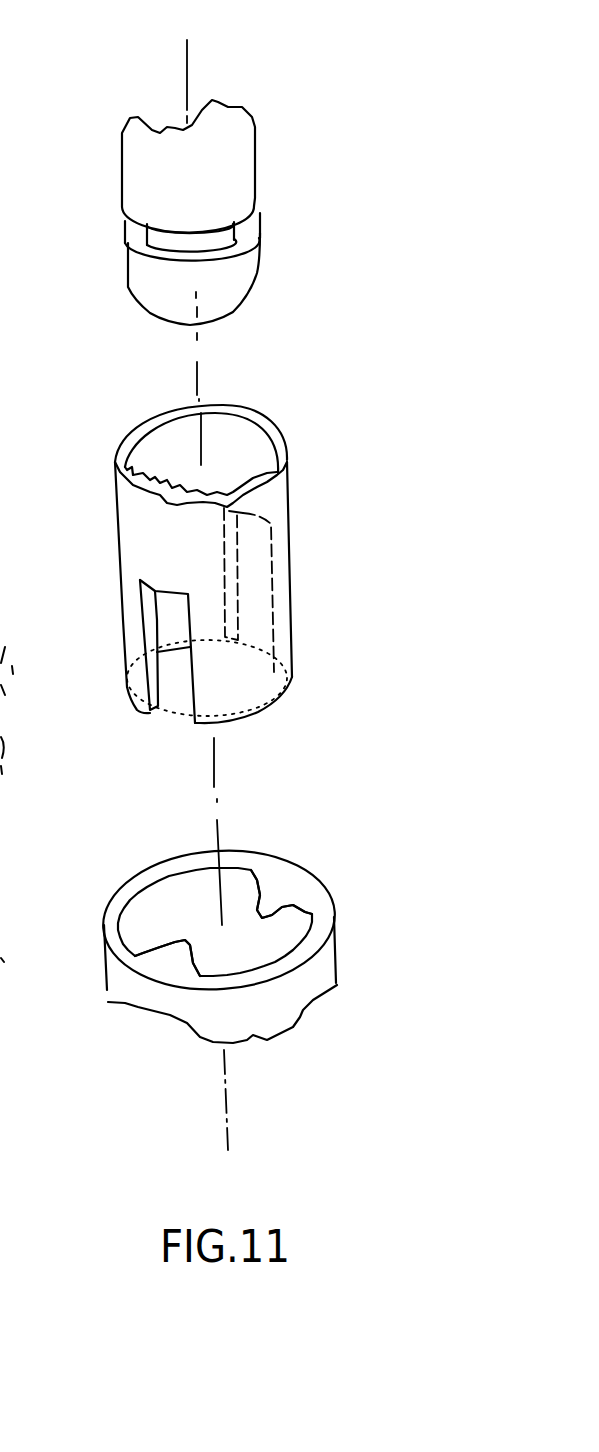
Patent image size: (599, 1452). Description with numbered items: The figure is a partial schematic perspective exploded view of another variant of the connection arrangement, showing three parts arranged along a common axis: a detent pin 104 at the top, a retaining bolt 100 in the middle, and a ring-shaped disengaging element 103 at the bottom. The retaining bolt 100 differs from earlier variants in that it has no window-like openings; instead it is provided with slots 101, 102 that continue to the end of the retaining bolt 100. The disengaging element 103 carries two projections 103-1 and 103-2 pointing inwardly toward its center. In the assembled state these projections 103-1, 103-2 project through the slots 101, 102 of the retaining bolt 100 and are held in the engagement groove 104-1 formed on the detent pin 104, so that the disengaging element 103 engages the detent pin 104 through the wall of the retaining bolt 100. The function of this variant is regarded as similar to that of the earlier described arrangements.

The retaining bolt 100 is at (125, 511).
The slot 101 is at (175, 701).
The slot 102 is at (300, 619).
The ring-shaped disengaging element 103 is at (272, 868).
The projection 103-1 is at (178, 962).
The projection 103-2 is at (270, 897).
The detent pin 104 is at (235, 170).
The engagement groove 104-1 is at (258, 222).